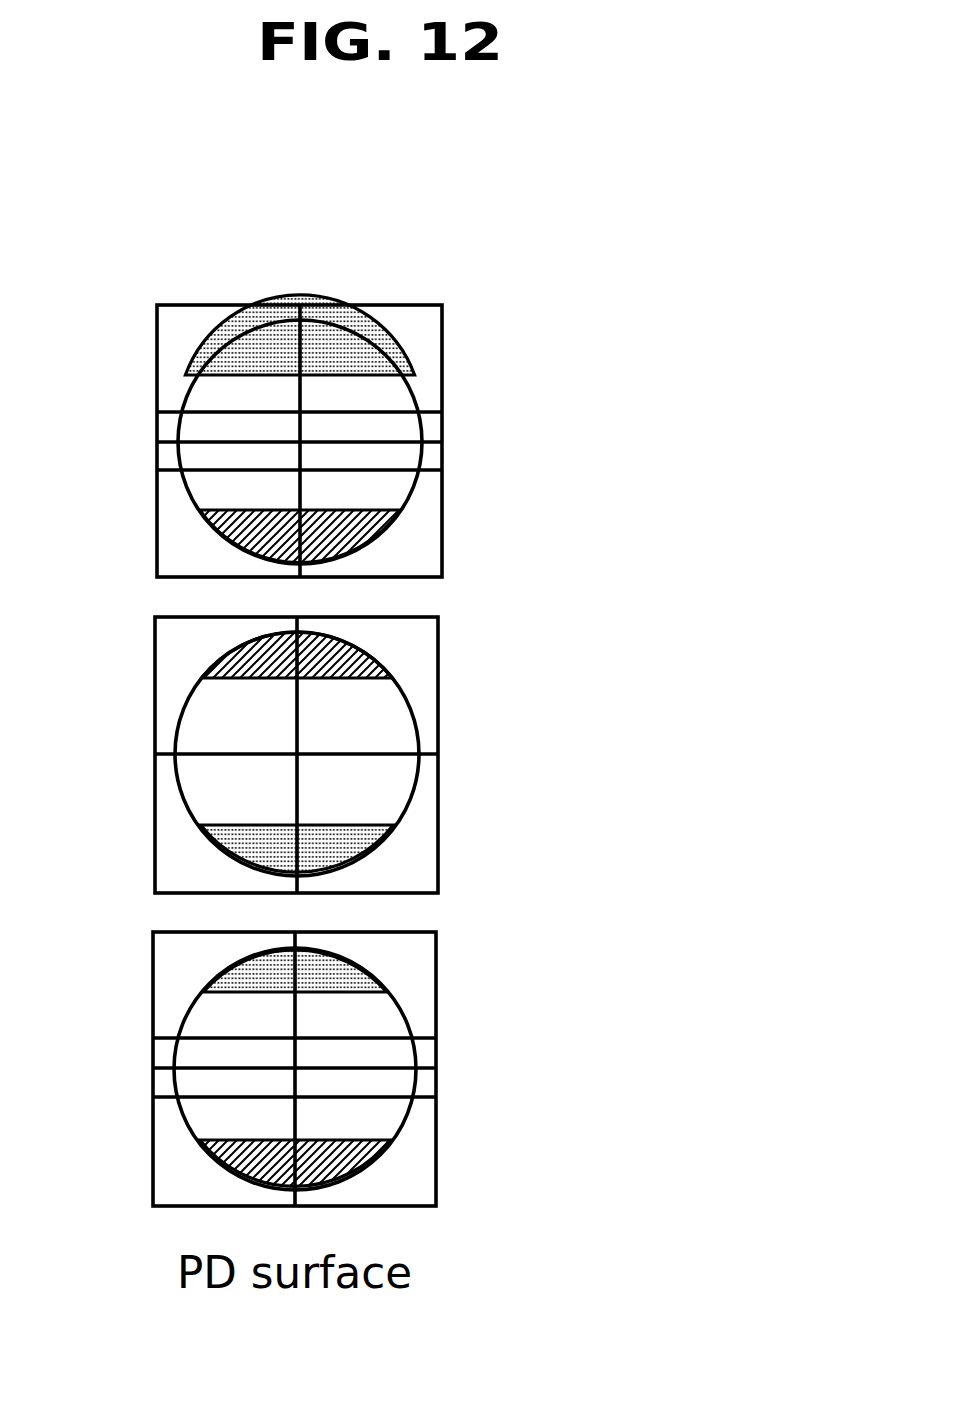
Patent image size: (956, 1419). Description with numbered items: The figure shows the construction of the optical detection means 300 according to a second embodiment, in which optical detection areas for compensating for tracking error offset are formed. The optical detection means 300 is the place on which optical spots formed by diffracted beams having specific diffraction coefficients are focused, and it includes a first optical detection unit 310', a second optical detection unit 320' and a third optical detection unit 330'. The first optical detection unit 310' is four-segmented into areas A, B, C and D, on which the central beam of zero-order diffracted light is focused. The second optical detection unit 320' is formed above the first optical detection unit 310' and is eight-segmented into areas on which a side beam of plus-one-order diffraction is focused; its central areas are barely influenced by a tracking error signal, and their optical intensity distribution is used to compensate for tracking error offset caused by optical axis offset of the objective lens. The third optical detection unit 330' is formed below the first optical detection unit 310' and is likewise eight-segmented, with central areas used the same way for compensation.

The optical detection means 300 is at (479, 259).
The second optical detection unit 320' is at (389, 430).
The first optical detection unit 310' is at (387, 755).
The third optical detection unit 330' is at (386, 1059).